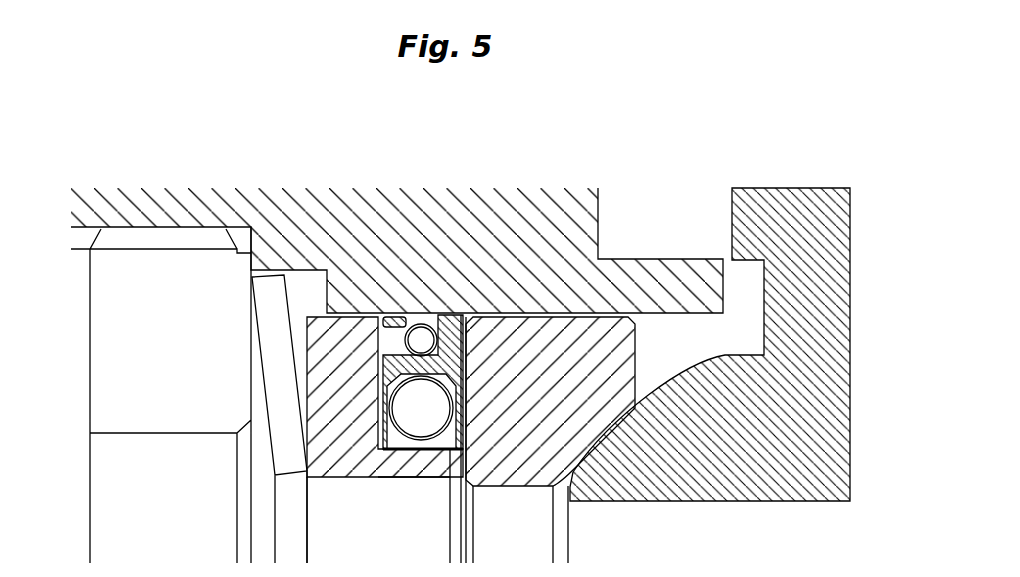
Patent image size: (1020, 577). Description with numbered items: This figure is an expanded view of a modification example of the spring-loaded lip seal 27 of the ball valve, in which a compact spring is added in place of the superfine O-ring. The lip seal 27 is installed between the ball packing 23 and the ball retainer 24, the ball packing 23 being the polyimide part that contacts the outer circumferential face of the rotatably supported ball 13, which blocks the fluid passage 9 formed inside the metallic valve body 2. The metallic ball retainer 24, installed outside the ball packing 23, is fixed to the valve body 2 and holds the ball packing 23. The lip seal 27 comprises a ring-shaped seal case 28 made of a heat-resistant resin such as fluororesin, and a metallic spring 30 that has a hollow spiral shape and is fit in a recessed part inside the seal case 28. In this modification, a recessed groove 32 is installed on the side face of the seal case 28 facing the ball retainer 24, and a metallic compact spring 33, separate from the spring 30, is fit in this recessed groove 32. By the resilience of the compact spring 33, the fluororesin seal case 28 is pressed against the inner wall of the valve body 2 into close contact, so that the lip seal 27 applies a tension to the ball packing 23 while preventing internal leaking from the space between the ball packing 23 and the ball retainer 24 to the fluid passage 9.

The valve body 2 is at (644, 259).
The fluid passage 9 is at (323, 542).
The ball 13 is at (712, 501).
The ball packing 23 is at (505, 486).
The ball retainer 24 is at (402, 477).
The lip seal 27 is at (380, 368).
The seal case 28 is at (453, 315).
The spring 30 is at (432, 455).
The recessed groove 32 is at (393, 313).
The compact spring 33 is at (420, 315).